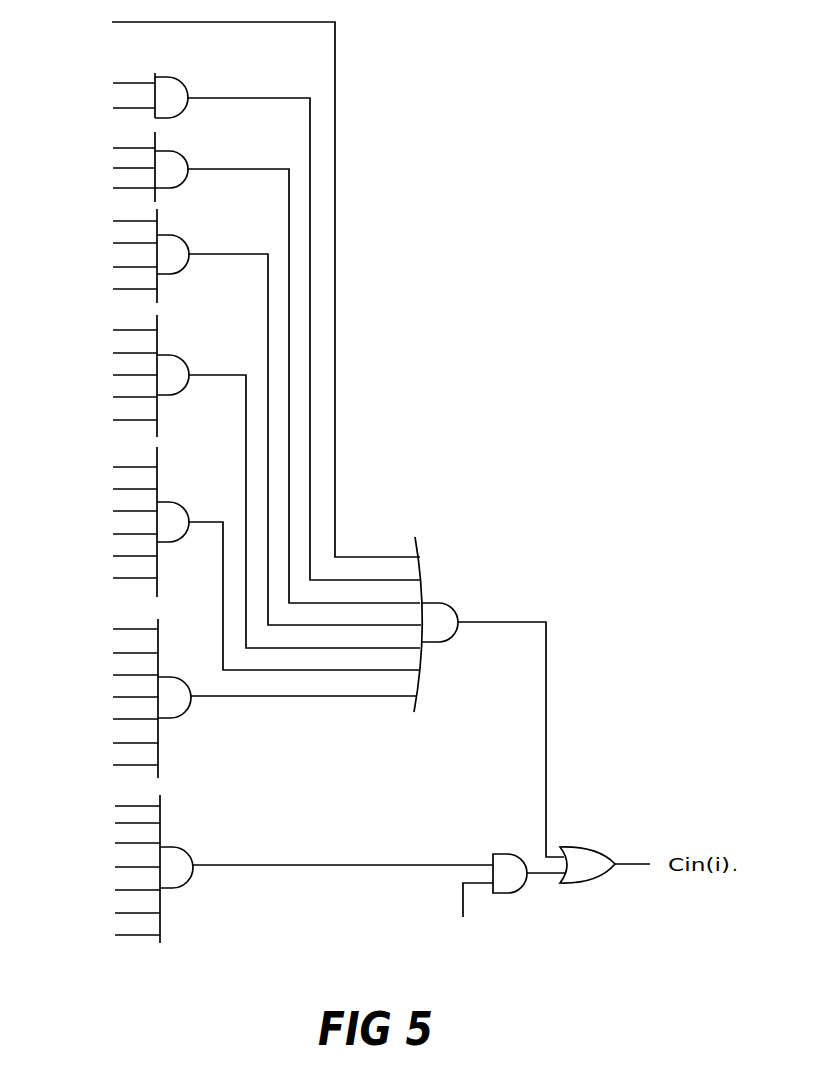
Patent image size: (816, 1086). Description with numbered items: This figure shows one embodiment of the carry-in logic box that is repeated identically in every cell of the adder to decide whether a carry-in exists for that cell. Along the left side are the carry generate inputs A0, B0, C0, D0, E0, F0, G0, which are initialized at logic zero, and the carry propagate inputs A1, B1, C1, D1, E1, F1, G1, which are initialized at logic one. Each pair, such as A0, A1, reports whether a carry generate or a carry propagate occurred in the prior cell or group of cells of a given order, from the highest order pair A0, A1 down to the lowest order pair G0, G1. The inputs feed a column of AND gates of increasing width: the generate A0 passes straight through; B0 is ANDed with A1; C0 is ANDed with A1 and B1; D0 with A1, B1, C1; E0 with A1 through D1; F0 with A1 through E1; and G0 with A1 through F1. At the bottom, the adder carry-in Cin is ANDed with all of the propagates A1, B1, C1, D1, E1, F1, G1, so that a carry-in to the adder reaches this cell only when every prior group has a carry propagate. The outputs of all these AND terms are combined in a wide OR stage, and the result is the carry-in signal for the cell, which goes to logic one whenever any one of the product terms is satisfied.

The carry generate input A0 is at (245, 287).
The carry propagate input A1 is at (115, 447).
The carry generate input B0 is at (112, 109).
The carry propagate input B1 is at (115, 500).
The carry generate input C0 is at (112, 188).
The carry propagate input C1 is at (117, 558).
The carry generate input D0 is at (116, 287).
The carry propagate input D1 is at (120, 633).
The carry generate input E0 is at (118, 420).
The carry propagate input E1 is at (121, 725).
The carry generate input F0 is at (119, 578).
The carry propagate input F1 is at (121, 828).
The carry generate input G0 is at (120, 763).
The carry propagate input G1 is at (121, 934).
The carry-in to the adder Cin is at (477, 915).